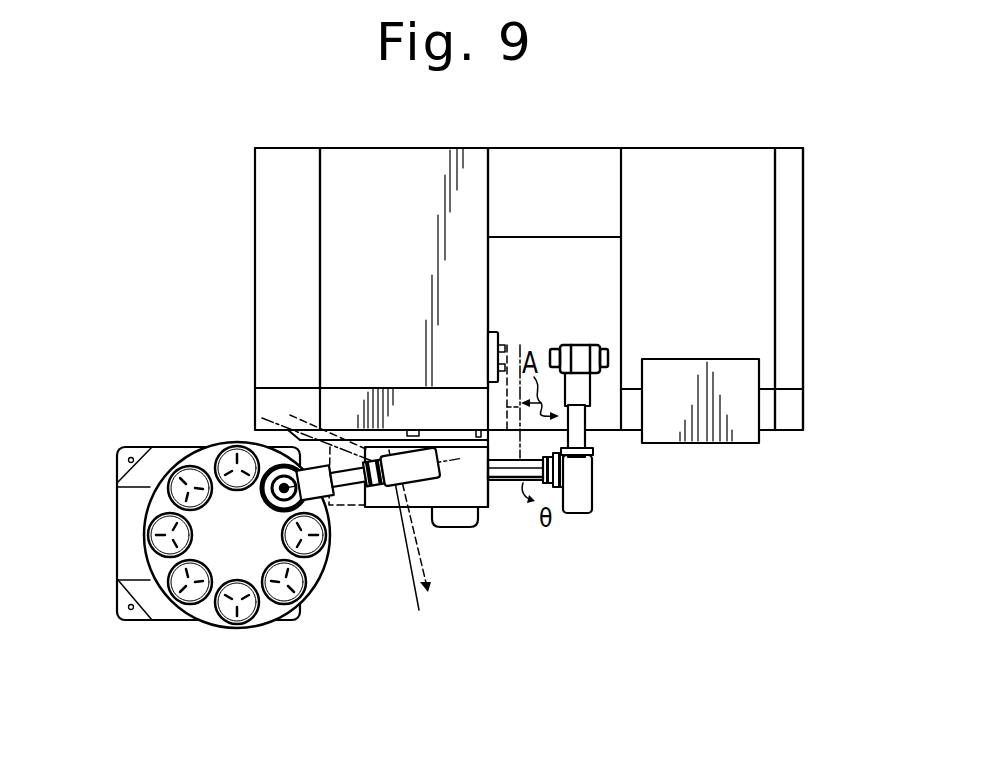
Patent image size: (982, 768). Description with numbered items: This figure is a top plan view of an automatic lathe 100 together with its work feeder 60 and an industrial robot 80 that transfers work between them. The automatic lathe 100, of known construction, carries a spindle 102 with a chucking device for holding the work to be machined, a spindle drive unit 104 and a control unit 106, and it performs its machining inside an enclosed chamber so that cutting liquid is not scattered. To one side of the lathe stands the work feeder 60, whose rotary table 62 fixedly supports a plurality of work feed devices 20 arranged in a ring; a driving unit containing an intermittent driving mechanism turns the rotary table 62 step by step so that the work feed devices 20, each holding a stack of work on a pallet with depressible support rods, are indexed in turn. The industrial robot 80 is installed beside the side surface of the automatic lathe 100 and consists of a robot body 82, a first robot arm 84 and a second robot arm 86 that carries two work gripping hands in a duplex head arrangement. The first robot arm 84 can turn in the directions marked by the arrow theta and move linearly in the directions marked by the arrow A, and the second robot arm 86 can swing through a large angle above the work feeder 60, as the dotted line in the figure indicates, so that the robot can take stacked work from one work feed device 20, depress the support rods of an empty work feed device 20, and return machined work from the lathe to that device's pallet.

The work feed device 20 is at (150, 500).
The work feeder 60 is at (184, 622).
The rotary table 62 is at (318, 566).
The industrial robot 80 is at (478, 531).
The robot body 82 is at (443, 530).
The first robot arm 84 is at (505, 484).
The second robot arm 86 is at (592, 425).
The automatic lathe 100 is at (254, 305).
The spindle 102 is at (499, 332).
The spindle drive unit 104 is at (393, 178).
The control unit 106 is at (755, 224).